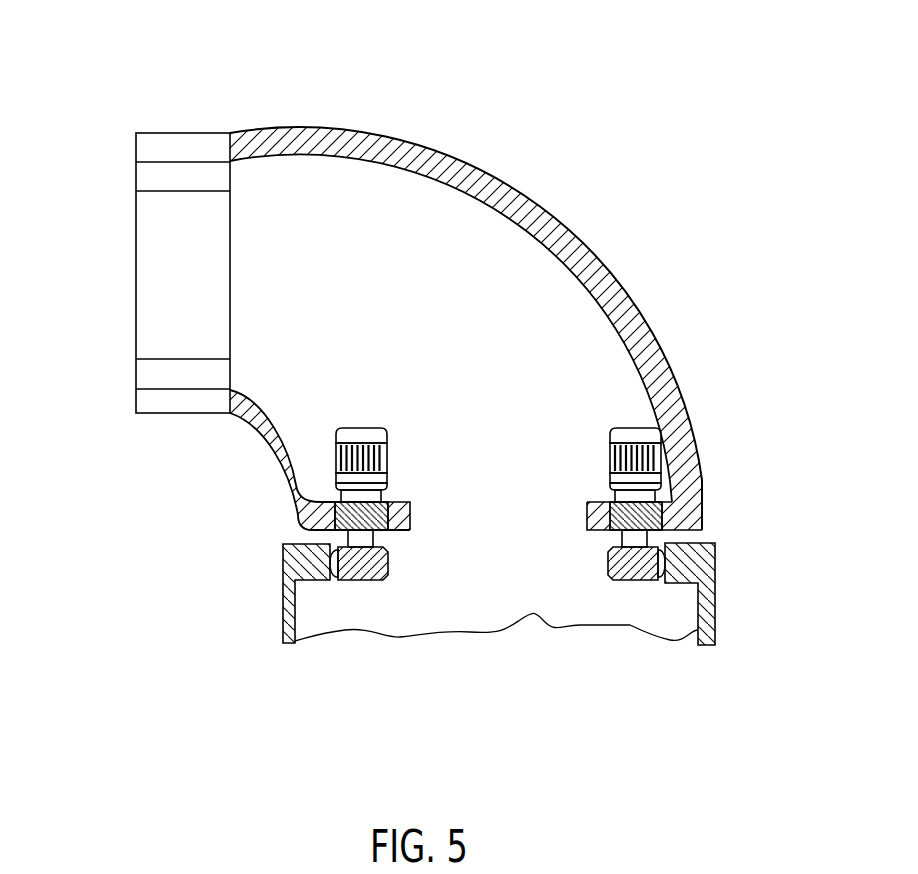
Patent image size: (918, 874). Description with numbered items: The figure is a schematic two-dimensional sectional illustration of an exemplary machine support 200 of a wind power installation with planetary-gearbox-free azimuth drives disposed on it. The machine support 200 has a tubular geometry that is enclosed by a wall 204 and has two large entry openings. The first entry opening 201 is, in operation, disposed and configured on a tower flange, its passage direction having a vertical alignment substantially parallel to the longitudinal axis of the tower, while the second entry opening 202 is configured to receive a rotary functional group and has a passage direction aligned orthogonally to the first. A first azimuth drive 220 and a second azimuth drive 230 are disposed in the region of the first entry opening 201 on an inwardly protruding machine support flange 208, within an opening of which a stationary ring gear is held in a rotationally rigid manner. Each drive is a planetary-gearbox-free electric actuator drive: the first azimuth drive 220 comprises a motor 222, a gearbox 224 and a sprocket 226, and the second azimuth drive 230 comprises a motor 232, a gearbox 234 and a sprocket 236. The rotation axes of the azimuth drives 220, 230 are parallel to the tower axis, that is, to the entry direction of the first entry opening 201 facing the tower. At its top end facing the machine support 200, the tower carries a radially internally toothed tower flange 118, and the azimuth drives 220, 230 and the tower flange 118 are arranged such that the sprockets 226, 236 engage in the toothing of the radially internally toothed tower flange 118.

The machine support 200 is at (185, 70).
The first entry opening 201 is at (482, 679).
The second entry opening 202 is at (121, 284).
The wall 204 is at (647, 332).
The machine support flange 208 is at (673, 518).
The radially internally toothed tower flange 118 is at (673, 565).
The first planetary-gearbox-free electric actuator drive 220 is at (585, 474).
The motor 222 is at (637, 457).
The gearbox 224 is at (612, 530).
The sprocket 226 is at (632, 580).
The second planetary-gearbox-free electric actuator drive 230 is at (411, 473).
The motor 232 is at (340, 462).
The gearbox 234 is at (340, 513).
The sprocket 236 is at (367, 580).